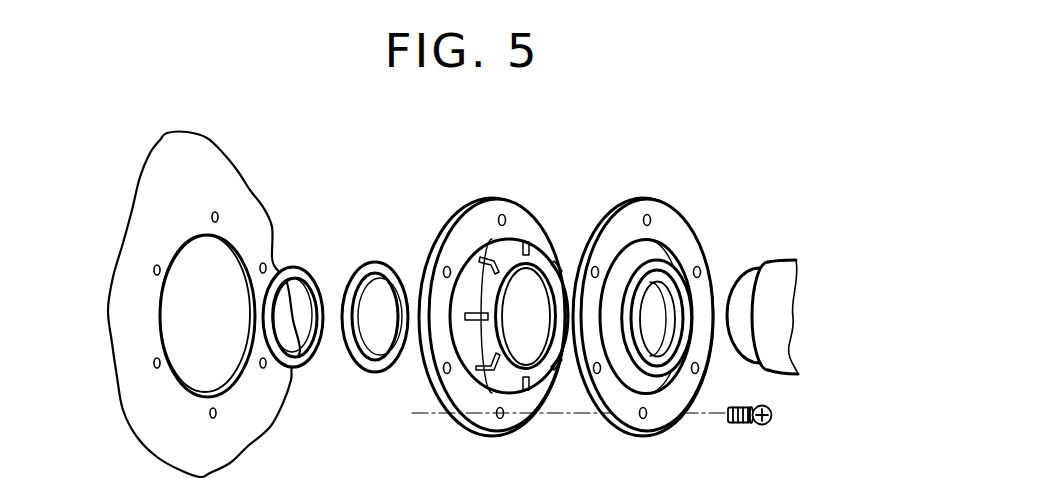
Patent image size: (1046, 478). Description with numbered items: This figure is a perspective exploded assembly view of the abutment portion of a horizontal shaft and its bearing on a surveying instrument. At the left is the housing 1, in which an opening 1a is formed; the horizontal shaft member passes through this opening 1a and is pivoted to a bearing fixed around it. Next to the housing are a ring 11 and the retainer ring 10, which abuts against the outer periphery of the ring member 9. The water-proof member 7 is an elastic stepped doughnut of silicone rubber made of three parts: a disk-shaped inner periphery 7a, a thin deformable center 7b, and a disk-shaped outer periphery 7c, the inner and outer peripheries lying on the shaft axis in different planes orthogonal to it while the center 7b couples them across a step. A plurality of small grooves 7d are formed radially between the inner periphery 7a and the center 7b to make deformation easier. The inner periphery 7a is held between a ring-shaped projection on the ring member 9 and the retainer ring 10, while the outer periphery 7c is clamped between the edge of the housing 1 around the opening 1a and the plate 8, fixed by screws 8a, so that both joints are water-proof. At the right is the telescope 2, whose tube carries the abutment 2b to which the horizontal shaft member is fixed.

The housing 1 is at (138, 190).
The opening 1a is at (180, 247).
The seal ring 11 is at (292, 267).
The retainer ring 10 is at (365, 262).
The water-proof member 7 is at (508, 198).
The inner periphery 7a is at (490, 338).
The center 7b is at (483, 380).
The outer periphery 7c is at (518, 422).
The small grooves 7d is at (482, 257).
The plate 8 is at (625, 198).
The screw 8a is at (772, 421).
The ring member 9 is at (657, 260).
The telescope 2 is at (782, 264).
The abutment 2b is at (782, 260).